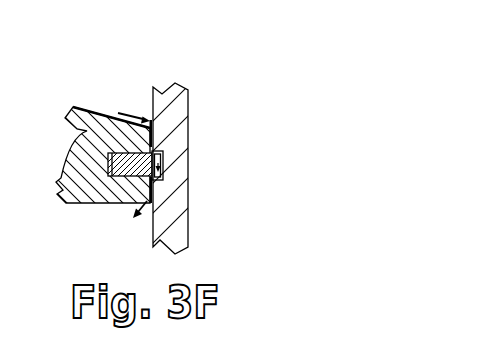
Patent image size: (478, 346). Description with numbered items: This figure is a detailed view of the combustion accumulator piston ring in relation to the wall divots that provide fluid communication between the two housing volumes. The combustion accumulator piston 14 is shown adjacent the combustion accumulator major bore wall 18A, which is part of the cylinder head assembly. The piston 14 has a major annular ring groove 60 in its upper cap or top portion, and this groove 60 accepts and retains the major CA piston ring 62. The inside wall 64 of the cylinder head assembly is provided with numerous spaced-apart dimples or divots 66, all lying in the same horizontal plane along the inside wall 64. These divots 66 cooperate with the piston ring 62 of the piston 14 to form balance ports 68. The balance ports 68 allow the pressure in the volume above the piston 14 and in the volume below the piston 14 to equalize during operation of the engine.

The combustion accumulator piston 14 is at (108, 108).
The major annular ring groove 60 is at (112, 179).
The major CA piston ring 62 is at (108, 154).
The inside wall 64 is at (152, 229).
The dimples or divots 66 is at (163, 153).
The balance ports 68 is at (163, 173).
The combustion accumulator major bore wall 18A is at (172, 216).